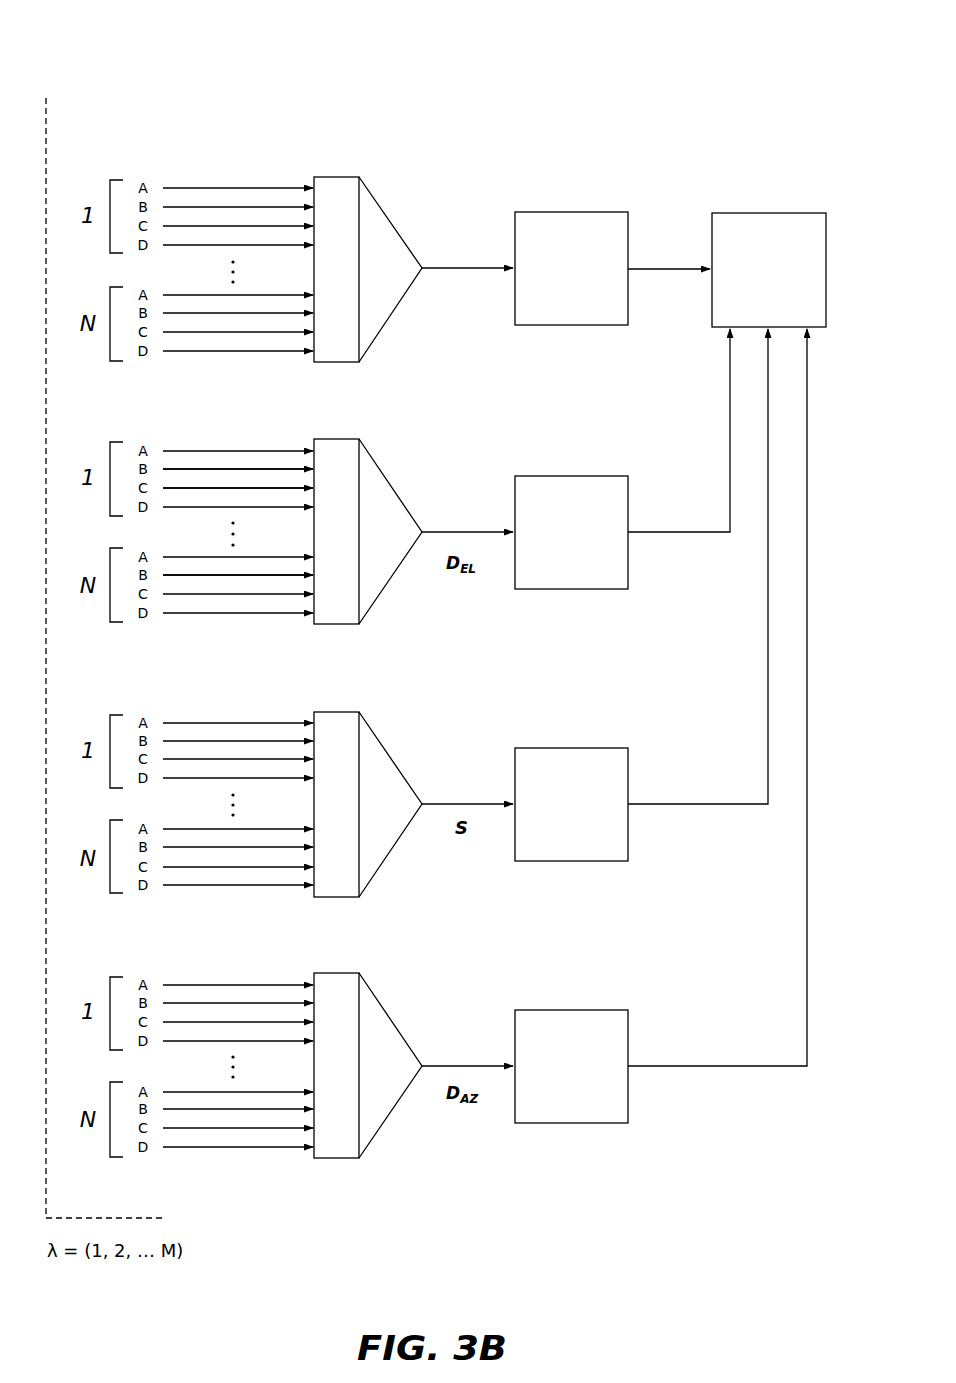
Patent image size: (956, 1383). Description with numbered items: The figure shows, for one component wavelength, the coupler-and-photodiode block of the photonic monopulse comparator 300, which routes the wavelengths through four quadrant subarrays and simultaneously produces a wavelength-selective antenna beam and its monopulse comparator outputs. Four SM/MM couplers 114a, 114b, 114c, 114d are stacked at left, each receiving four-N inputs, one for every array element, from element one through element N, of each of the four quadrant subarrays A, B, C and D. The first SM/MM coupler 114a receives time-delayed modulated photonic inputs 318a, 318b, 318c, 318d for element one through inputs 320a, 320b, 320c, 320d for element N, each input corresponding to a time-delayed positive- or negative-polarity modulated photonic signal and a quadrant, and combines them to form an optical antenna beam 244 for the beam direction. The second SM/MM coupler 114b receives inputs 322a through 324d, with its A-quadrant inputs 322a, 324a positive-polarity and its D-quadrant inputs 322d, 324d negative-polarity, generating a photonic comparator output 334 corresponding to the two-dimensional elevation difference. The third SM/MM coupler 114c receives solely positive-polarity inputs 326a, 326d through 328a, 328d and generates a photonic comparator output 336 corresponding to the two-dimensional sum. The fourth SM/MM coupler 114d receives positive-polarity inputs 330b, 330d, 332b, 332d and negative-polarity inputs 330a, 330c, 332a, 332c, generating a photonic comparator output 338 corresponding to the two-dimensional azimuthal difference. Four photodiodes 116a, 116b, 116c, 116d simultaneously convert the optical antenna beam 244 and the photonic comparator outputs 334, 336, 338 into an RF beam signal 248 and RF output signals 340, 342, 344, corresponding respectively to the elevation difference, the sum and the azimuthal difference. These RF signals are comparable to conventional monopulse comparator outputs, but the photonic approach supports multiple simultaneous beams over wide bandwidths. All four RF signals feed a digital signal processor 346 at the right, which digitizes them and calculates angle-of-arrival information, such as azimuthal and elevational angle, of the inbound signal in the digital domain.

The photonic monopulse comparator 300 is at (96, 60).
The time-delayed modulated photonic input 318a is at (188, 188).
The time-delayed modulated photonic input 318b is at (210, 207).
The time-delayed modulated photonic input 318c is at (223, 226).
The time-delayed modulated photonic input 318d is at (262, 245).
The time-delayed modulated photonic input 320a is at (188, 295).
The time-delayed modulated photonic input 320b is at (202, 313).
The time-delayed modulated photonic input 320c is at (223, 332).
The time-delayed modulated photonic input 320d is at (277, 351).
The positive-polarity A-quadrant input 322a is at (263, 451).
The negative-polarity D-quadrant input 322d is at (210, 507).
The positive-polarity A-quadrant input 324a is at (267, 557).
The negative-polarity D-quadrant input 324d is at (198, 613).
The time-delayed modulated photonic input 326a is at (259, 723).
The time-delayed modulated photonic input 326d is at (267, 778).
The time-delayed modulated photonic input 328a is at (202, 829).
The time-delayed modulated photonic input 328d is at (260, 885).
The negative-polarity A-quadrant input 330a is at (208, 985).
The positive-polarity C-quadrant input 330b is at (237, 1003).
The negative-polarity B-quadrant input 330c is at (192, 1022).
The positive-polarity D-quadrant input 330d is at (265, 1041).
The negative-polarity A-quadrant input 332a is at (197, 1092).
The positive-polarity C-quadrant input 332b is at (195, 1109).
The negative-polarity B-quadrant input 332c is at (206, 1128).
The positive-polarity D-quadrant input 332d is at (290, 1147).
The SM/MM coupler 114a is at (390, 218).
The SM/MM coupler 114b is at (400, 487).
The SM/MM coupler 114c is at (400, 750).
The SM/MM coupler 114d is at (400, 1008).
The photodiode 116a is at (571, 268).
The photodiode 116b is at (571, 532).
The photodiode 116c is at (571, 804).
The photodiode 116d is at (571, 1066).
The optical antenna beam 244 is at (456, 268).
The RF beam signal 248 is at (669, 268).
The photonic comparator output 334 is at (457, 532).
The photonic comparator output 336 is at (460, 804).
The photonic comparator output 338 is at (457, 1066).
The RF output signal 340 is at (730, 490).
The RF output signal 342 is at (768, 785).
The RF output signal 344 is at (807, 1038).
The digital signal processor 346 is at (769, 270).